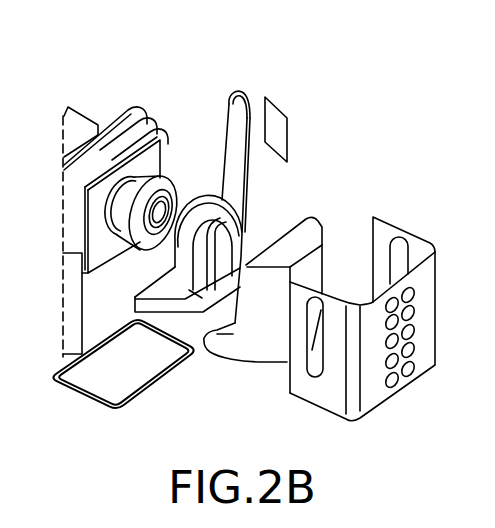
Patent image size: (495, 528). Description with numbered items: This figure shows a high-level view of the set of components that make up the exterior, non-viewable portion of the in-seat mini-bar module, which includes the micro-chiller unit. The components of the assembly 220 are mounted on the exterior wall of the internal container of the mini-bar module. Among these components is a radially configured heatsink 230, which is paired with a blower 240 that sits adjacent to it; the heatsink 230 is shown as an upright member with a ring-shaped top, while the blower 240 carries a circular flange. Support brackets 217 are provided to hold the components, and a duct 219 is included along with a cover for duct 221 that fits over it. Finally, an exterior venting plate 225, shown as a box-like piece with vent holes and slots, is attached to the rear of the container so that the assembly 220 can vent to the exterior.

The support brackets 217 is at (239, 100).
The duct 219 is at (241, 232).
The assembly 220 is at (108, 306).
The cover for duct 221 is at (313, 226).
The exterior venting plate 225 is at (300, 397).
The radially configured heatsink 230 is at (168, 187).
The blower 240 is at (132, 193).